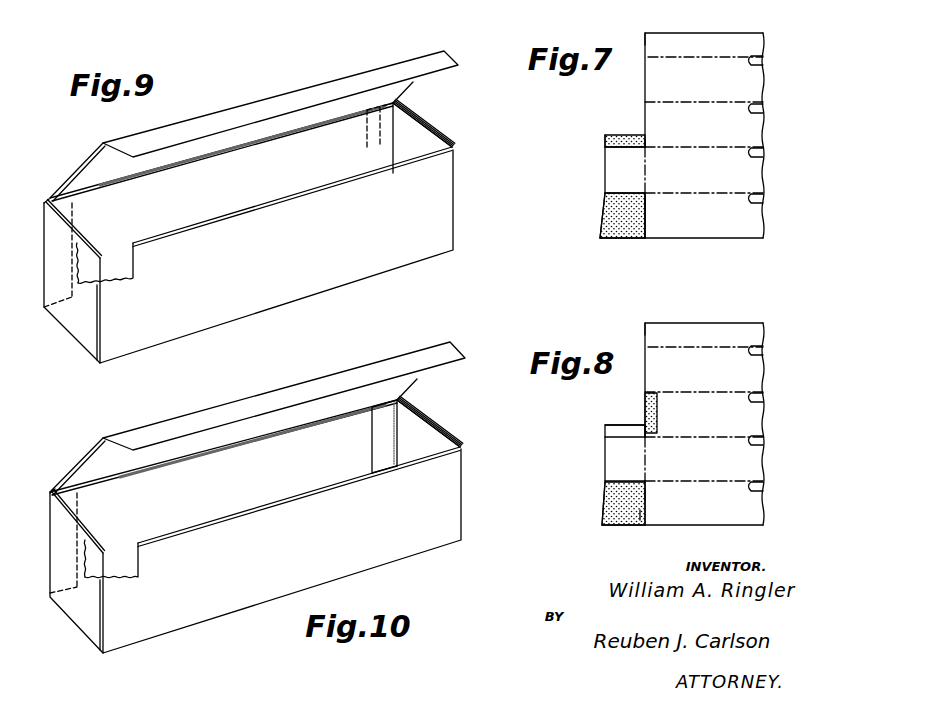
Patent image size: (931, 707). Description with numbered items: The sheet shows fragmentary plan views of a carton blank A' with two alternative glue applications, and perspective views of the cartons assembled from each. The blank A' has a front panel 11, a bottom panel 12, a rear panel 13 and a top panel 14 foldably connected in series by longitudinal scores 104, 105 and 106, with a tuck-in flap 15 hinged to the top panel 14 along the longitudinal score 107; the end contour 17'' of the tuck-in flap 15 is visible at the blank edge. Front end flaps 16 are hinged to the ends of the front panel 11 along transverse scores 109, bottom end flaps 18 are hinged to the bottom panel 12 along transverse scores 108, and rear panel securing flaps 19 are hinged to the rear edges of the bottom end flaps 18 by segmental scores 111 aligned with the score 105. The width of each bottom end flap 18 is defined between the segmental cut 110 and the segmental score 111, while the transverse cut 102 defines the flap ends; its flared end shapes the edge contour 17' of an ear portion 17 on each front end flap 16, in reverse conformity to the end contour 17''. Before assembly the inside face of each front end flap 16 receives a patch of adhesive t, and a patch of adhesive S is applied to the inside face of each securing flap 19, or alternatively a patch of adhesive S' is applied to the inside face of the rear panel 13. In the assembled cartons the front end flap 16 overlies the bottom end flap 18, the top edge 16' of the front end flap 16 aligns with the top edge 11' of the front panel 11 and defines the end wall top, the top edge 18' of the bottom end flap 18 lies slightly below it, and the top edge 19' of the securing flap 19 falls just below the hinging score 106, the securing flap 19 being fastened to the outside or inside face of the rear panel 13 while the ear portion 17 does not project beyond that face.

In FIG. 9, the front panel 11 is at (275, 256).
In FIG. 10, the front panel 11 is at (280, 551).
In FIG. 7, the front panel 11 is at (717, 221).
In FIG. 8, the front panel 11 is at (715, 505).
In FIG. 9, the top edge of front panel 11' is at (292, 197).
In FIG. 10, the top edge of front panel 11' is at (299, 497).
In FIG. 7, the bottom panel 12 is at (706, 185).
In FIG. 8, the bottom panel 12 is at (706, 467).
In FIG. 9, the rear panel 13 is at (241, 177).
In FIG. 10, the rear panel 13 is at (277, 469).
In FIG. 7, the rear panel 13 is at (708, 140).
In FIG. 8, the rear panel 13 is at (708, 424).
In FIG. 9, the top panel 14 is at (98, 160).
In FIG. 10, the top panel 14 is at (100, 453).
In FIG. 7, the top panel 14 is at (708, 95).
In FIG. 8, the top panel 14 is at (708, 381).
In FIG. 9, the tuck-in flap 15 is at (281, 98).
In FIG. 10, the tuck-in flap 15 is at (279, 390).
In FIG. 7, the tuck-in flap 15 is at (708, 57).
In FIG. 8, the tuck-in flap 15 is at (708, 342).
In FIG. 9, the front end flap 16 is at (72, 282).
In FIG. 10, the front end flap 16 is at (63, 572).
In FIG. 7, the front end flap 16 is at (648, 229).
In FIG. 8, the front end flap 16 is at (604, 503).
In FIG. 9, the top edge of front end flap 16' is at (276, 163).
In FIG. 10, the top edge of front end flap 16' is at (279, 456).
In FIG. 9, the ear portion 17 is at (34, 189).
In FIG. 10, the ear portion 17 is at (39, 488).
In FIG. 7, the ear portion 17 is at (622, 250).
In FIG. 8, the ear portion 17 is at (615, 542).
In FIG. 7, the edge contour of ear portion 17' is at (586, 215).
In FIG. 8, the edge contour of ear portion 17' is at (580, 509).
In FIG. 7, the end contour of tuck-in flap 17'' is at (641, 29).
In FIG. 8, the end contour of tuck-in flap 17'' is at (635, 318).
In FIG. 9, the bottom end flap 18 is at (266, 192).
In FIG. 10, the bottom end flap 18 is at (269, 482).
In FIG. 7, the bottom end flap 18 is at (620, 170).
In FIG. 8, the bottom end flap 18 is at (586, 459).
In FIG. 9, the top edge of bottom end flap 18' is at (268, 166).
In FIG. 10, the top edge of bottom end flap 18' is at (283, 468).
In FIG. 9, the rear panel securing flap 19 is at (234, 157).
In FIG. 10, the rear panel securing flap 19 is at (236, 451).
In FIG. 7, the rear panel securing flap 19 is at (588, 138).
In FIG. 8, the rear panel securing flap 19 is at (602, 425).
In FIG. 9, the top edge of rear panel securing flap 19' is at (218, 175).
In FIG. 10, the top edge of rear panel securing flap 19' is at (251, 482).
In FIG. 7, the transverse cut 102 is at (648, 145).
In FIG. 8, the transverse cut 102 is at (653, 433).
In FIG. 7, the longitudinal score 104 is at (766, 199).
In FIG. 8, the longitudinal score 104 is at (766, 487).
In FIG. 7, the longitudinal score 105 is at (766, 153).
In FIG. 8, the longitudinal score 105 is at (766, 441).
In FIG. 9, the longitudinal score 106 is at (172, 163).
In FIG. 10, the longitudinal score 106 is at (208, 448).
In FIG. 7, the longitudinal score 106 is at (766, 109).
In FIG. 8, the longitudinal score 106 is at (766, 398).
In FIG. 7, the longitudinal score 107 is at (766, 61).
In FIG. 8, the longitudinal score 107 is at (766, 351).
In FIG. 7, the transverse score 108 is at (647, 160).
In FIG. 8, the transverse score 108 is at (647, 465).
In FIG. 7, the transverse score 109 is at (647, 205).
In FIG. 8, the transverse score 109 is at (647, 493).
In FIG. 7, the segmental cut 110 is at (616, 193).
In FIG. 8, the segmental cut 110 is at (618, 481).
In FIG. 7, the segmental score 111 is at (608, 150).
In FIG. 8, the segmental score 111 is at (630, 432).
In FIG. 7, the patch of adhesive S is at (625, 130).
In FIG. 8, the patch of adhesive S' is at (638, 408).
In FIG. 7, the patch of adhesive t is at (613, 208).
In FIG. 8, the patch of adhesive t is at (627, 518).
In FIG. 7, the blank A' is at (766, 17).
In FIG. 8, the blank A' is at (766, 305).